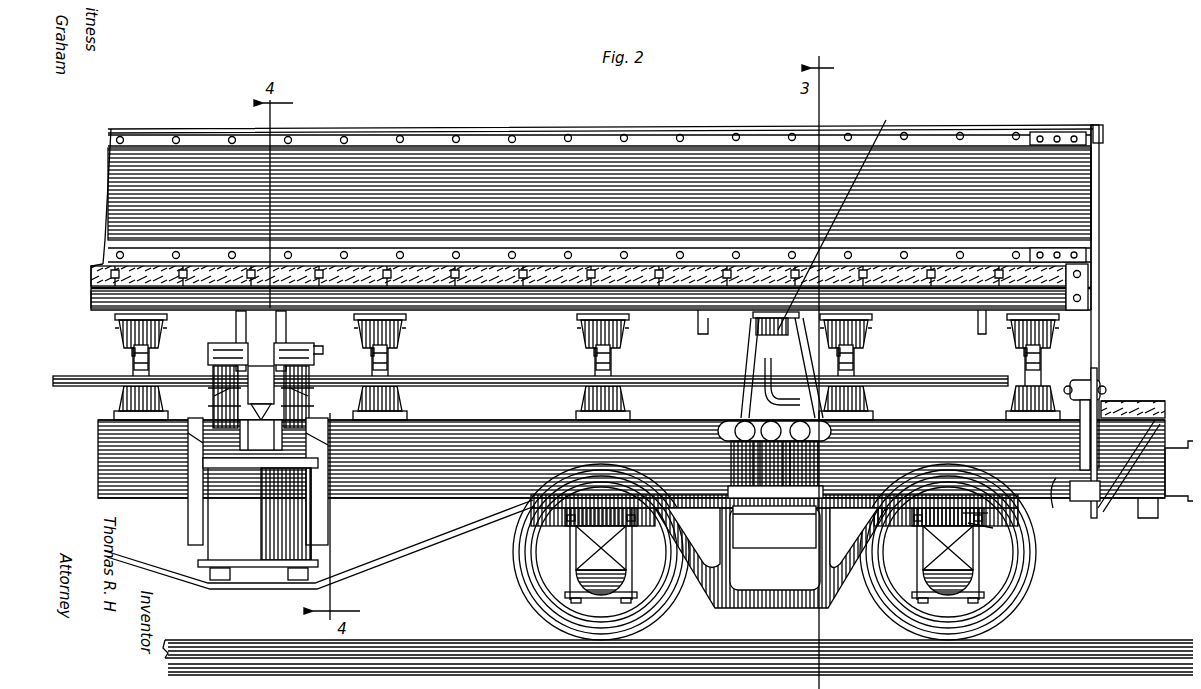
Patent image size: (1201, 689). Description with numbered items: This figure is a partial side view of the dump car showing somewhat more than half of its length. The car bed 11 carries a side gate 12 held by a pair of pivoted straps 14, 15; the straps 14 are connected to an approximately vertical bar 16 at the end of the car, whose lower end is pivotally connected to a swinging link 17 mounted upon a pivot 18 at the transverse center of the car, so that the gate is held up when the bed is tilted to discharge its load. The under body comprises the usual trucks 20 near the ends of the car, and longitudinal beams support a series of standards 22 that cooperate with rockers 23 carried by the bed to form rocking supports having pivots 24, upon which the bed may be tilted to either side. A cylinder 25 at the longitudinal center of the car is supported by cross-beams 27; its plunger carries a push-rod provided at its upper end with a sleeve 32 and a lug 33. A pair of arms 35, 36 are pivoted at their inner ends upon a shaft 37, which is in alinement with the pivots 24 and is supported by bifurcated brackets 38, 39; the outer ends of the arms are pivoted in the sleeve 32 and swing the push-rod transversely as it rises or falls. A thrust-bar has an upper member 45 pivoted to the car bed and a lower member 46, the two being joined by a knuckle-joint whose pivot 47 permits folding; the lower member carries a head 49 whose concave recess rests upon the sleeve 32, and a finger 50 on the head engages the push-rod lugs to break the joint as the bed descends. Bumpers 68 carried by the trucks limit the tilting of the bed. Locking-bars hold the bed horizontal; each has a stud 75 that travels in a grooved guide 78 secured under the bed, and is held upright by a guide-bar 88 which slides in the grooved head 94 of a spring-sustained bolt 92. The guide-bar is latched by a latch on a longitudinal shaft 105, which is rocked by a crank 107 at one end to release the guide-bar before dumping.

The car bed 11 is at (1082, 290).
The side gate 12 is at (1043, 196).
The pivoted strap 14 is at (1087, 118).
The pivoted strap 15 is at (1085, 238).
The bar 16 is at (1092, 344).
The swinging link 17 is at (1060, 490).
The pivot 18 is at (1096, 381).
The truck 20 is at (795, 600).
The standard 22 is at (112, 396).
The rocker 23 is at (149, 326).
The pivot 24 is at (142, 348).
The cylinder 25 is at (200, 546).
The cross-beam 27 is at (180, 515).
The sleeve 32 is at (238, 420).
The lug 33 is at (252, 460).
The arm 35 is at (302, 396).
The arm 36 is at (208, 400).
The shaft 37 is at (315, 342).
The bifurcated bracket 38 is at (200, 350).
The bifurcated bracket 39 is at (306, 350).
The upper member of thrust-bar 45 is at (228, 320).
The lower member of thrust-bar 46 is at (248, 405).
The pivot 47 is at (240, 398).
The head 49 is at (310, 405).
The finger 50 is at (300, 410).
The bumper 68 is at (790, 433).
The stud 75 is at (760, 332).
The grooved guide 78 is at (840, 214).
The guide-bar 88 is at (790, 375).
The bolt 92 is at (975, 518).
The grooved head 94 is at (968, 508).
The shaft 105 is at (497, 368).
The crank 107 is at (768, 393).